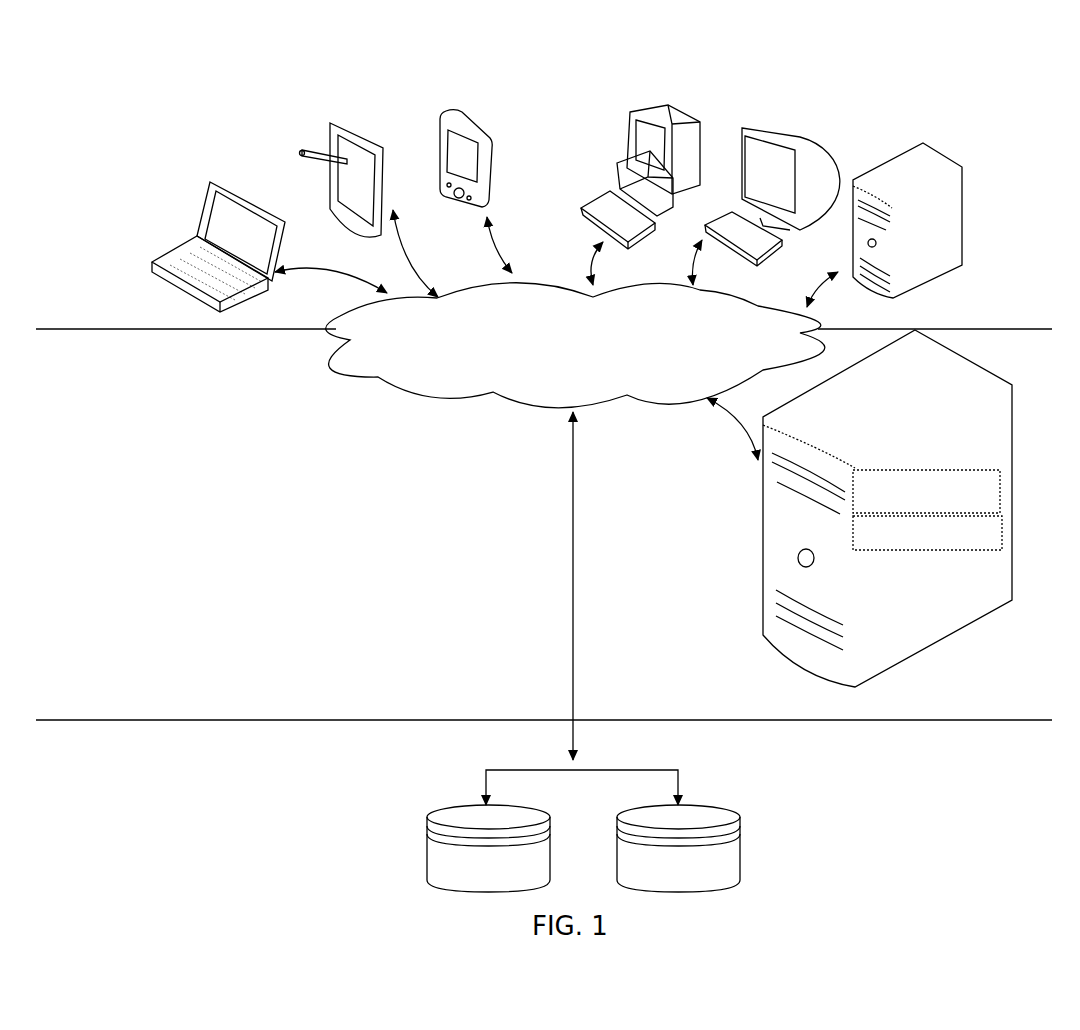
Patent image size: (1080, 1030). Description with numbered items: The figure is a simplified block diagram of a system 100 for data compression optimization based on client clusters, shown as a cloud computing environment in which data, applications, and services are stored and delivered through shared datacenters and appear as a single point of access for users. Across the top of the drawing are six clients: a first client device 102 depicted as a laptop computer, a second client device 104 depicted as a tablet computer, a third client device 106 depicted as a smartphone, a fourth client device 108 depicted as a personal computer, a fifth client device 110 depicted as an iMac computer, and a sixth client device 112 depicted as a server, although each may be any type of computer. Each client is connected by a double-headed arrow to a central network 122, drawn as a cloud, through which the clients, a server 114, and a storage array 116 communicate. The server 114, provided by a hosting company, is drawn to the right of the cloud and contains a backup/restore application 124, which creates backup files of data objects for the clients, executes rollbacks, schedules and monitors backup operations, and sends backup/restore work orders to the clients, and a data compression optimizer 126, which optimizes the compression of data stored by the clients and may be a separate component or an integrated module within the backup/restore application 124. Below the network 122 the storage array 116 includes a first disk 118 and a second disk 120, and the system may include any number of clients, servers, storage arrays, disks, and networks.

The system 100 is at (560, 84).
The first client device 102 is at (216, 182).
The second client device 104 is at (333, 124).
The third client device 106 is at (446, 113).
The fourth client device 108 is at (630, 117).
The fifth client device 110 is at (752, 130).
The sixth client device 112 is at (922, 144).
The server 114 is at (852, 523).
The storage array 116 is at (770, 608).
The first disk 118 is at (443, 808).
The second disk 120 is at (628, 813).
The network 122 is at (575, 345).
The backup/restore application 124 is at (926, 491).
The data compression optimizer 126 is at (927, 533).